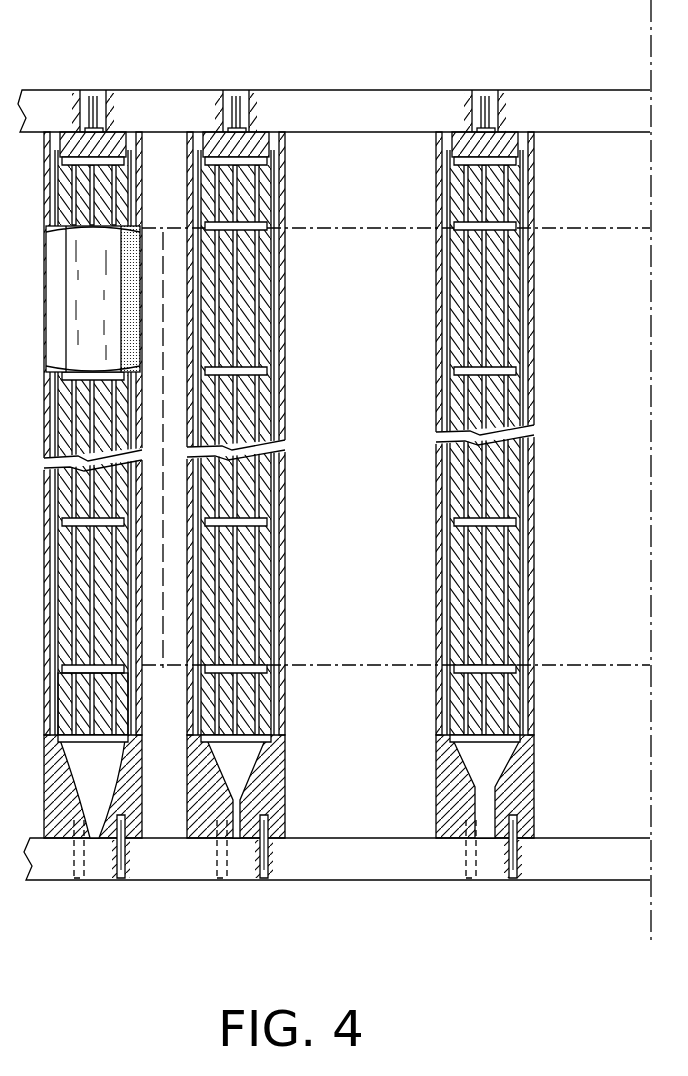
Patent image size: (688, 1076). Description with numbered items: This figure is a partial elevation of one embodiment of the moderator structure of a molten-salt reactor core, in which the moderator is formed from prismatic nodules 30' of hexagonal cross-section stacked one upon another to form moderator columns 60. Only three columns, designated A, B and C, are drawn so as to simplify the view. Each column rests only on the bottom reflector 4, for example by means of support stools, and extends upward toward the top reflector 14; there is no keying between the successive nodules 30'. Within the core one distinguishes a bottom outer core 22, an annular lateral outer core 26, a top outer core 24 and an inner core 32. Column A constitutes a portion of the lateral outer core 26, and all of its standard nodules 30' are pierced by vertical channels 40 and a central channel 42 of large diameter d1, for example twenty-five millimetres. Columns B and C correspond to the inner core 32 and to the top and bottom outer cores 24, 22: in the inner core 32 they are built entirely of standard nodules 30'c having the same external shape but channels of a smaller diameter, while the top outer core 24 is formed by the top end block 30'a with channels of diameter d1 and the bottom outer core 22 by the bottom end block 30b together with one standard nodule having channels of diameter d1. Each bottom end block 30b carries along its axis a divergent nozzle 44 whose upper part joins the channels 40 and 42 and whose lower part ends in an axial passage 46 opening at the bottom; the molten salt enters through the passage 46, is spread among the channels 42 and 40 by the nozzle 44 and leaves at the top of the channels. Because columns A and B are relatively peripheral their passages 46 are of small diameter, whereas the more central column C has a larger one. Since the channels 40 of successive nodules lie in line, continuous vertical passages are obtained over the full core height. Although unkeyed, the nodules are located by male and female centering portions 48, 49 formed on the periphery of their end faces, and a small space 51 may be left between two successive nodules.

The reflector 4 is at (383, 870).
The top reflector 14 is at (343, 103).
The bottom outer core 22 is at (378, 764).
The top outer core 24 is at (378, 197).
The lateral outer core 26 is at (158, 228).
The nodule 30' is at (72, 433).
The top end block 30'a is at (79, 135).
The standard nodule of inner core 30'c is at (284, 433).
The bottom end block 30b is at (53, 768).
The inner core 32 is at (378, 441).
The vertical channel 40 is at (53, 400).
The central channel 42 is at (97, 433).
The divergent nozzle 44 is at (65, 780).
The axial passage 46 is at (98, 845).
The male centering portion 48 is at (135, 655).
The female centering portion 49 is at (133, 683).
The small space 51 is at (270, 650).
The moderator column 60 is at (44, 296).
The large channel diameter d1 is at (53, 680).
The column A is at (297, 502).
The column B is at (283, 505).
The column C is at (537, 534).